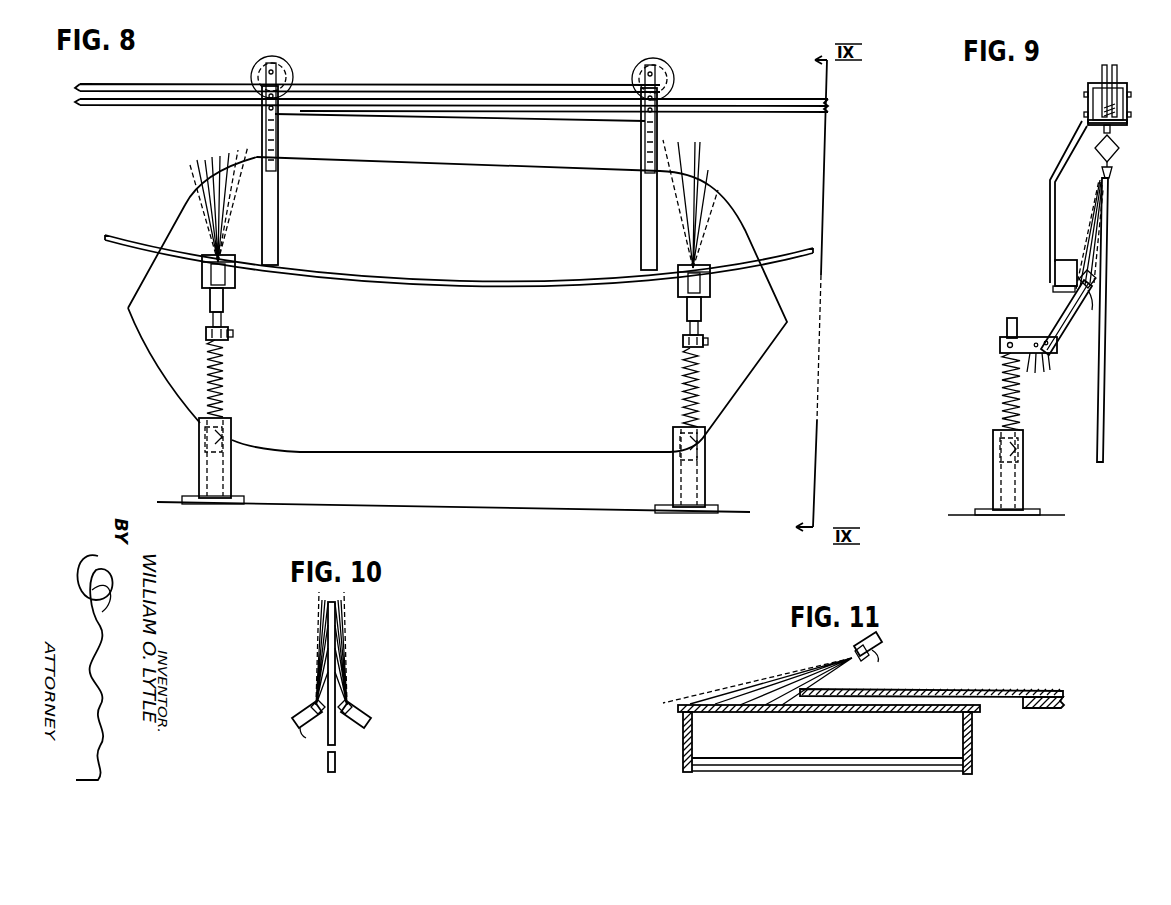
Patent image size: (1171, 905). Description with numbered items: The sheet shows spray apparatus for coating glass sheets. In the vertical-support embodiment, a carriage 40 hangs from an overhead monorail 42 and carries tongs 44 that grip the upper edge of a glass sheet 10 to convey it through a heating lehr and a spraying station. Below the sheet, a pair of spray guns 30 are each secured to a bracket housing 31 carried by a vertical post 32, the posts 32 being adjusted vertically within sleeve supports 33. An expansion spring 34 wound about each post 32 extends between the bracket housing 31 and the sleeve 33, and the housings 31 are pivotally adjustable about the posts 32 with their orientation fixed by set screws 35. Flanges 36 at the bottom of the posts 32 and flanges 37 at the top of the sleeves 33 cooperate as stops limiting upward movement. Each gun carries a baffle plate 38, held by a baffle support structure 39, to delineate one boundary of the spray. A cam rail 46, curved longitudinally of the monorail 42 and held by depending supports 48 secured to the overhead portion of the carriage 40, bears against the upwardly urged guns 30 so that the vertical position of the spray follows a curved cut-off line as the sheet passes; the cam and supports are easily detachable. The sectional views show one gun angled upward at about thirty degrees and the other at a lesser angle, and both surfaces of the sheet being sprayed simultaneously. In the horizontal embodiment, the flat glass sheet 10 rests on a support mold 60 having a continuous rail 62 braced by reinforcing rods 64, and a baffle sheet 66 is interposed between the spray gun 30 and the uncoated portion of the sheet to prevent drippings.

In FIG. 10, the glass sheet 10 is at (337, 760).
In FIG. 11, the glass sheet 10 is at (934, 705).
In FIG. 8, the spray gun 30 is at (210, 299).
In FIG. 9, the spray gun 30 is at (1055, 330).
In FIG. 10, the spray gun 30 is at (295, 714).
In FIG. 11, the spray gun 30 is at (880, 637).
In FIG. 8, the bracket housing 31 is at (206, 332).
In FIG. 9, the bracket housing 31 is at (1028, 336).
In FIG. 8, the vertical post 32 is at (214, 356).
In FIG. 9, the vertical post 32 is at (1006, 325).
In FIG. 8, the sleeve support 33 is at (232, 482).
In FIG. 9, the sleeve support 33 is at (1024, 487).
In FIG. 8, the expansion spring 34 is at (222, 372).
In FIG. 9, the expansion spring 34 is at (1004, 395).
In FIG. 8, the set screw 35 is at (233, 335).
In FIG. 9, the set screw 35 is at (1006, 347).
In FIG. 8, the flange 36 is at (222, 452).
In FIG. 9, the flange 36 is at (1016, 458).
In FIG. 8, the flange 37 is at (225, 438).
In FIG. 9, the flange 37 is at (1018, 446).
In FIG. 8, the baffle plate 38 is at (232, 262).
In FIG. 9, the baffle plate 38 is at (1098, 286).
In FIG. 10, the baffle plate 38 is at (345, 720).
In FIG. 11, the baffle plate 38 is at (868, 660).
In FIG. 9, the baffle support structure 39 is at (1092, 306).
In FIG. 10, the baffle support structure 39 is at (315, 726).
In FIG. 11, the baffle support structure 39 is at (880, 652).
In FIG. 8, the carriage 40 is at (437, 84).
In FIG. 9, the carriage 40 is at (1128, 103).
In FIG. 8, the overhead monorail 42 is at (172, 97).
In FIG. 9, the overhead monorail 42 is at (1125, 124).
In FIG. 8, the tongs 44 is at (263, 134).
In FIG. 9, the tongs 44 is at (1122, 150).
In FIG. 8, the cam rail 46 is at (496, 284).
In FIG. 9, the cam rail 46 is at (1055, 265).
In FIG. 8, the depending support 48 is at (278, 212).
In FIG. 9, the depending support 48 is at (1050, 210).
In FIG. 11, the support mold 60 is at (844, 743).
In FIG. 11, the continuous rail 62 is at (692, 733).
In FIG. 11, the reinforcing rod 64 is at (773, 758).
In FIG. 11, the baffle sheet 66 is at (965, 692).